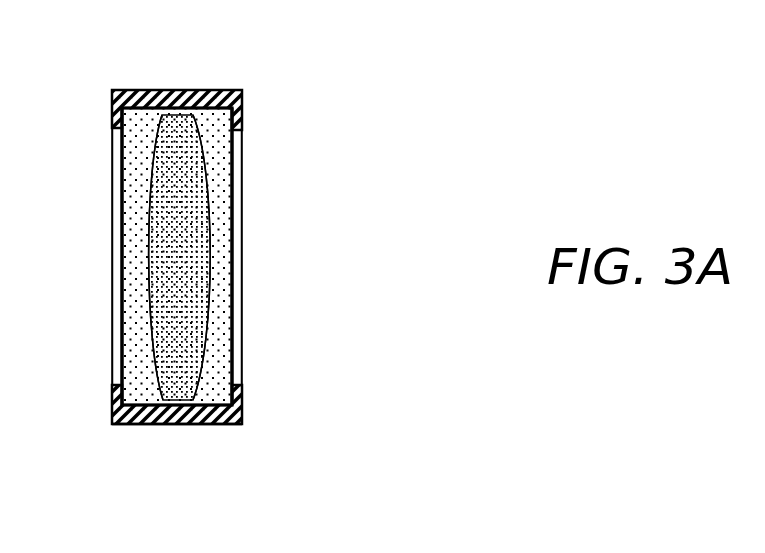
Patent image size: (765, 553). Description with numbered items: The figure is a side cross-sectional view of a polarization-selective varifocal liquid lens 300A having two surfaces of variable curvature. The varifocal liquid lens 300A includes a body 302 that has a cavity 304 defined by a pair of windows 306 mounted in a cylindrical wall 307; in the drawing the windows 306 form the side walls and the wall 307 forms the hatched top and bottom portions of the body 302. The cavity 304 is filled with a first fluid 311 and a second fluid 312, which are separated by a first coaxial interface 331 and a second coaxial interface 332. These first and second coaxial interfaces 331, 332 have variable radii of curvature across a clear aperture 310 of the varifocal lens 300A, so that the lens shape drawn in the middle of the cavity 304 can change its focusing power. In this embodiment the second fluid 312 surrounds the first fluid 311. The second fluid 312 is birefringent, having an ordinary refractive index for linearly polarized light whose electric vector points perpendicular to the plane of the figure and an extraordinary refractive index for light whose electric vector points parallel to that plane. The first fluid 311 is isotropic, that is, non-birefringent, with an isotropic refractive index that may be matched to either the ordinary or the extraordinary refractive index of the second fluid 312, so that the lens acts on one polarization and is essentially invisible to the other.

The varifocal liquid lens 300A is at (322, 75).
The body 302 is at (208, 449).
The cavity 304 is at (146, 125).
The windows 306 is at (113, 233).
The cylindrical wall 307 is at (143, 425).
The clear aperture 310 is at (82, 177).
The first fluid 311 is at (138, 347).
The second fluid 312 is at (197, 182).
The first coaxial interface 331 is at (149, 277).
The second coaxial interface 332 is at (213, 239).